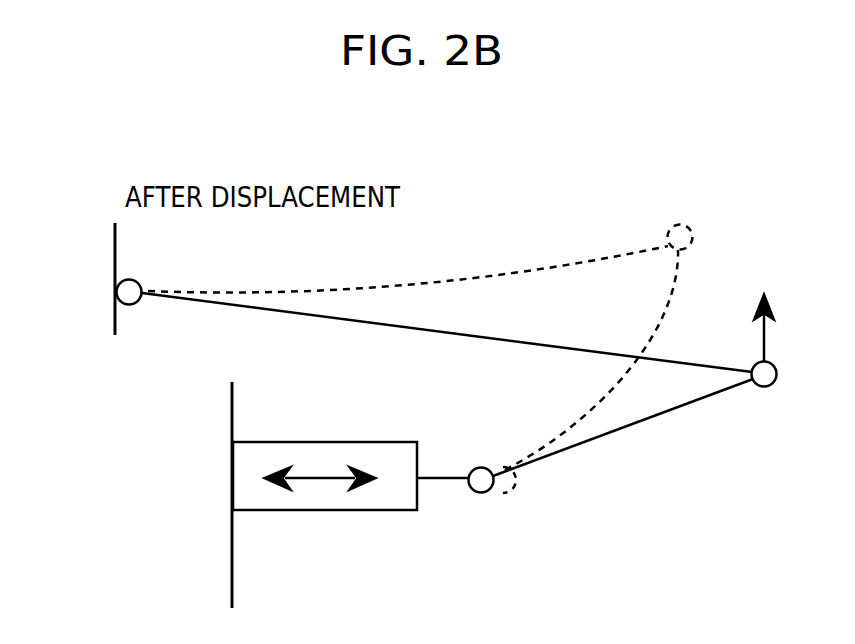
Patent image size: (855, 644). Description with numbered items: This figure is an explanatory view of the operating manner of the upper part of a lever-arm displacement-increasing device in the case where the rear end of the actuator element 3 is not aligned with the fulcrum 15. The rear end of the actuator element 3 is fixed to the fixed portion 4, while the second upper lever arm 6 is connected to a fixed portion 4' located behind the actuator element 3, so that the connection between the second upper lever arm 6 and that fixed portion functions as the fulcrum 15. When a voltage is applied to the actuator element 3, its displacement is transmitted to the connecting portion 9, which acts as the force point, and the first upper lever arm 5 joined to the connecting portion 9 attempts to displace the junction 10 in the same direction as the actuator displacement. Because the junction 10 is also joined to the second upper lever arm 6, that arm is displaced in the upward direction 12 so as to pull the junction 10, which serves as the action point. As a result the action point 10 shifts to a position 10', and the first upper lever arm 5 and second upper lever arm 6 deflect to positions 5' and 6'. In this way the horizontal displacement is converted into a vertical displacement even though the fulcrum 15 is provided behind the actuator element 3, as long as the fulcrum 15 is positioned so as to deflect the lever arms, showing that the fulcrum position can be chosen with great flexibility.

The actuator element 3 is at (307, 497).
The fixed portion 4 is at (189, 495).
The fixed support (displaced position) 4' is at (71, 255).
The first upper lever arm 5 is at (623, 463).
The position of first upper lever arm 5' is at (568, 360).
The second upper lever arm 6 is at (447, 348).
The position of second upper lever arm 6' is at (408, 233).
The connecting portion 9 is at (466, 503).
The junction 10 is at (787, 378).
The position of action point 10' is at (699, 219).
The upward direction 12 is at (774, 312).
The fulcrum 15 is at (138, 273).